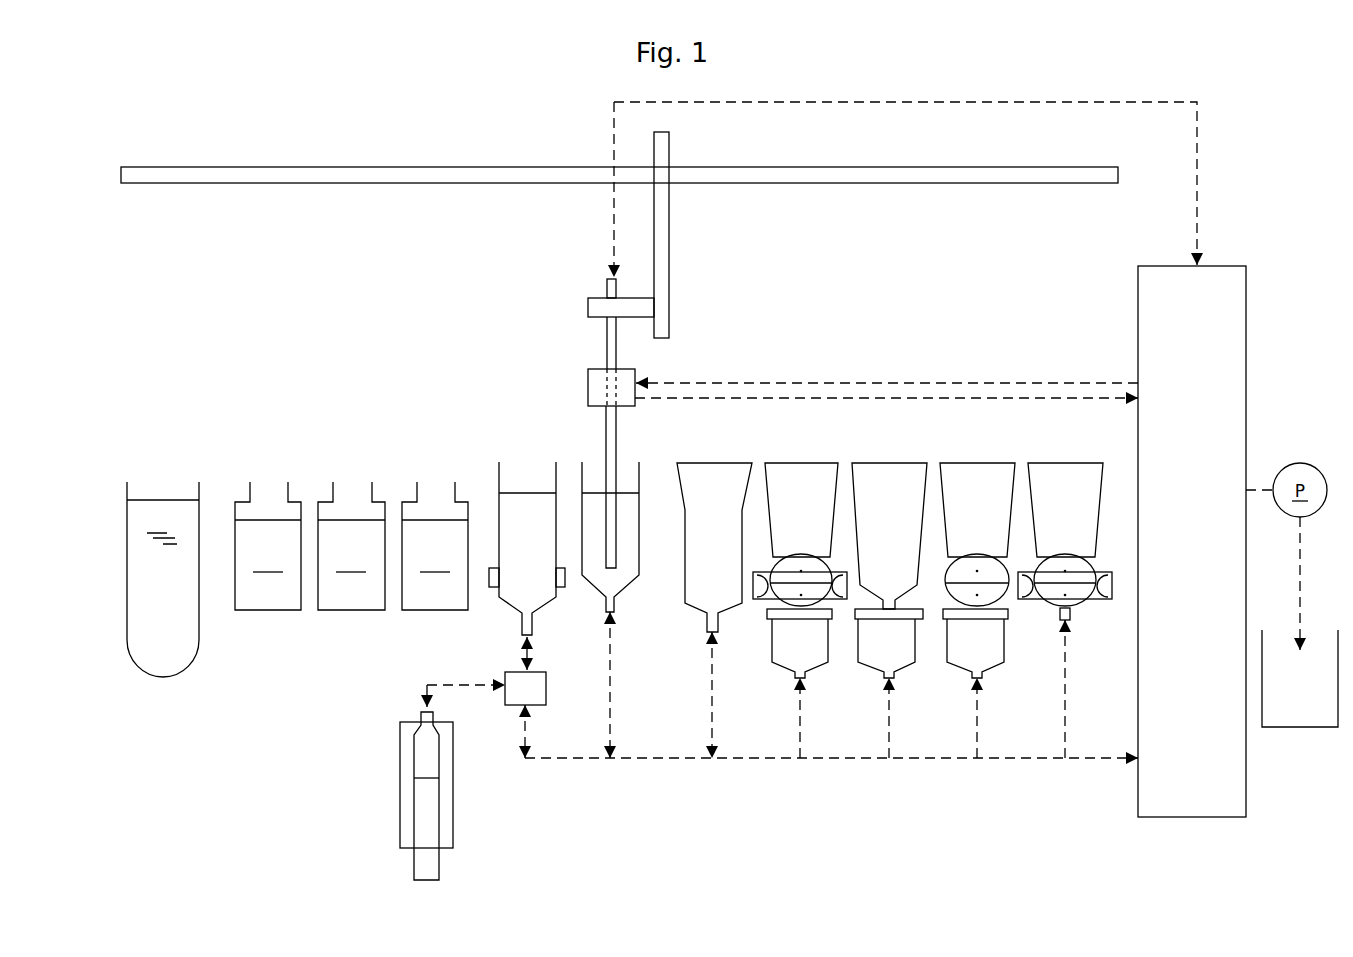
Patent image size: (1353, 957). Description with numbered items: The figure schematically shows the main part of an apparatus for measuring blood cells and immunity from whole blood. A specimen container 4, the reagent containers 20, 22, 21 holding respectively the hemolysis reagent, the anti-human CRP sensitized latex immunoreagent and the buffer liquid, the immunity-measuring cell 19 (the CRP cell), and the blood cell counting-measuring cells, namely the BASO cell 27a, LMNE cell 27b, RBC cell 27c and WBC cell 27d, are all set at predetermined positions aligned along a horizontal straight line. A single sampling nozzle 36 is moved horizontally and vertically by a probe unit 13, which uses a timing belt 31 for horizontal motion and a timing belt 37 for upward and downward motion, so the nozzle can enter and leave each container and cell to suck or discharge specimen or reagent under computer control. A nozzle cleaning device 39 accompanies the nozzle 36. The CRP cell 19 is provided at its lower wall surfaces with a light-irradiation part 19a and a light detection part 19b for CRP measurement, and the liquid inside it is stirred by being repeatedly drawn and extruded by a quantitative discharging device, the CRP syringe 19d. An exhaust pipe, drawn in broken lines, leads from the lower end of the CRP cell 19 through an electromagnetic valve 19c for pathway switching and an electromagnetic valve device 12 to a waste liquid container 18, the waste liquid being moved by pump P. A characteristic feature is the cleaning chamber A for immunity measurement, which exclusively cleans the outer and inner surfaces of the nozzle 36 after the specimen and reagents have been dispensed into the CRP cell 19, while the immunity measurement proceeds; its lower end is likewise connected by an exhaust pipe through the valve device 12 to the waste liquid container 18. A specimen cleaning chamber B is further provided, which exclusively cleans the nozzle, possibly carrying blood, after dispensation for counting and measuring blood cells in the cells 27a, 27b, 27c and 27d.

The specimen container 4 is at (163, 677).
The electromagnetic valve device 12 is at (1179, 461).
The probe unit 13 is at (619, 250).
The waste liquid container 18 is at (1305, 720).
The immunity-measuring cell 19 is at (499, 478).
The light-irradiation part 19a is at (488, 590).
The light detection part 19b is at (560, 588).
The electromagnetic valve for pathway switching 19c is at (512, 703).
The quantitative discharging device (CRP syringe) 19d is at (400, 806).
The reagent container 20 is at (264, 603).
The reagent container 21 is at (425, 610).
The reagent container 22 is at (345, 610).
The BASO cell 27a is at (792, 478).
The LMNE cell 27b is at (880, 478).
The RBC cell 27c is at (967, 485).
The WBC cell 27d is at (1062, 480).
The timing belt 31 is at (877, 180).
The sampling nozzle 36 is at (603, 433).
The timing belt 37 is at (715, 235).
The nozzle cleaning device 39 is at (588, 369).
The cleaning chamber for immunity measurement A is at (626, 578).
The specimen cleaning chamber B is at (725, 603).